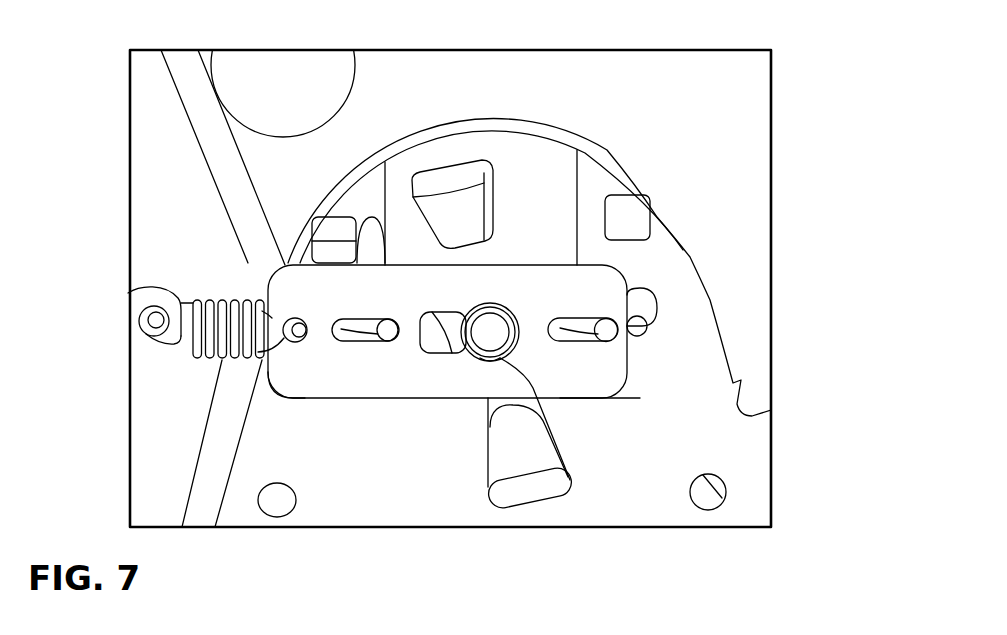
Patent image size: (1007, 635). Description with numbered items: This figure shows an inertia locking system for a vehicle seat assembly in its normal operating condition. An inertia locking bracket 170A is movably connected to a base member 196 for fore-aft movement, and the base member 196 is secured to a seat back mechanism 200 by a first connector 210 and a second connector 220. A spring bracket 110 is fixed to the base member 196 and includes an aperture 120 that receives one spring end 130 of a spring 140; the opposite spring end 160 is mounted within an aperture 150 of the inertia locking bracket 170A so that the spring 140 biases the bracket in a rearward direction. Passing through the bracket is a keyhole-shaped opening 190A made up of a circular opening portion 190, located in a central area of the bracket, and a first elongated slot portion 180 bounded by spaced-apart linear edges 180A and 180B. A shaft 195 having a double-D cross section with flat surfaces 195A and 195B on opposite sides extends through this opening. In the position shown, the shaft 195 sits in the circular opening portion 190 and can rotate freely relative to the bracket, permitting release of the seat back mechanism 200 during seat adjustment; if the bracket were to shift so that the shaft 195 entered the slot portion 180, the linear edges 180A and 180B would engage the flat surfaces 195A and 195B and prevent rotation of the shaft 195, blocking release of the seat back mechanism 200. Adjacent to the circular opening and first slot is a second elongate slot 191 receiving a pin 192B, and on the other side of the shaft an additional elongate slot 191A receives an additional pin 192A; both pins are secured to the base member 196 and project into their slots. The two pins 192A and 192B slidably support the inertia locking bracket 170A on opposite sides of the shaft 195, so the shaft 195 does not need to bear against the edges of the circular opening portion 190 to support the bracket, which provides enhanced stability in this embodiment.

The spring bracket 110 is at (138, 330).
The aperture 120 is at (143, 312).
The spring end 130 is at (192, 346).
The spring 140 is at (205, 362).
The aperture 150 is at (312, 350).
The spring end 160 is at (283, 362).
The inertia locking bracket 170A is at (605, 398).
The first elongated slot portion 180 is at (442, 355).
The linear edge 180A is at (460, 305).
The linear edge 180B is at (422, 353).
The circular opening portion 190 is at (605, 398).
The keyhole-shaped opening 190A is at (461, 357).
The second elongate slot 191 is at (583, 322).
The additional elongate slot 191A is at (352, 345).
The pin 192A is at (388, 330).
The pin 192B is at (608, 330).
The shaft 195 is at (490, 302).
The flat surface 195A is at (486, 330).
The flat surface 195B is at (500, 358).
The base member 196 is at (752, 447).
The seat back mechanism 200 is at (225, 229).
The first connector 210 is at (435, 180).
The second connector 220 is at (553, 500).